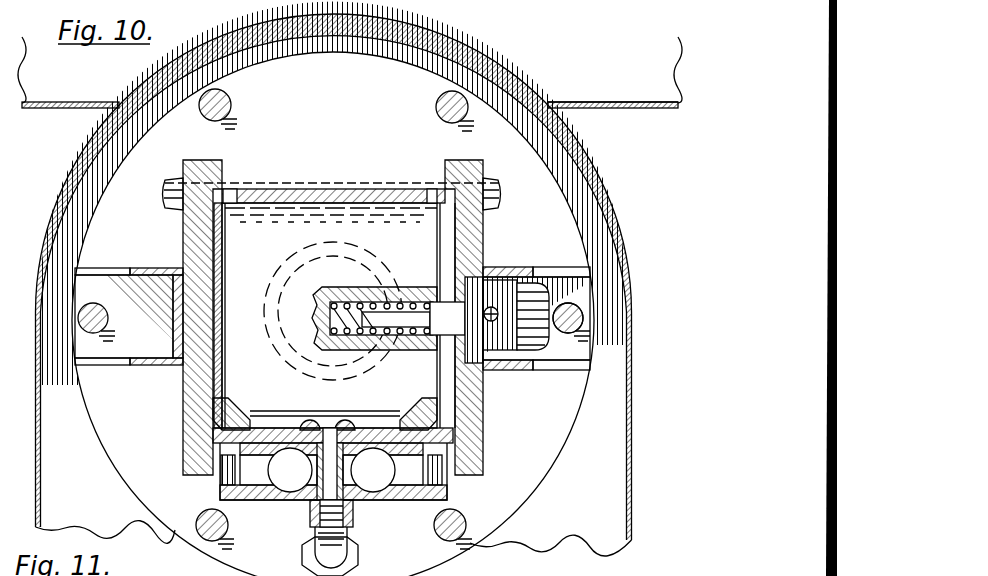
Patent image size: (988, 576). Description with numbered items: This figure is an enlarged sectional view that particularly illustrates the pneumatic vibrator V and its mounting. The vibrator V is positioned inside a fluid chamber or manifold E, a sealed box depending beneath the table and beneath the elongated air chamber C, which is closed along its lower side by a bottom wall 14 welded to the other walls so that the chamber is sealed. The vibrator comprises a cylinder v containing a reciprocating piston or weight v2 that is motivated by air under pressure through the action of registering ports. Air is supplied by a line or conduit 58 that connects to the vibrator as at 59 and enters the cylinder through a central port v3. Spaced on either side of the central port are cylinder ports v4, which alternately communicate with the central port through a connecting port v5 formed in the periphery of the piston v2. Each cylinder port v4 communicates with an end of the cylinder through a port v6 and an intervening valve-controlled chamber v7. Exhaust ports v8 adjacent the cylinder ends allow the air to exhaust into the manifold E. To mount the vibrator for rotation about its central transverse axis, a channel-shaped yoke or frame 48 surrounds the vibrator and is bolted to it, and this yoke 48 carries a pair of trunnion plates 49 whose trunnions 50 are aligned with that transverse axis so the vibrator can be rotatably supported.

The bottom wall 14 is at (645, 108).
The yoke 48 is at (146, 351).
The trunnion plates 49 is at (553, 243).
The trunnions 50 is at (272, 283).
The air line 58 is at (358, 556).
The vibrator connection 59 is at (353, 517).
The air chamber C is at (350, 72).
The manifold E is at (334, 288).
The vibrator V is at (334, 315).
The cylinder v is at (371, 196).
The piston v2 is at (391, 261).
The central port v3 is at (333, 484).
The cylinder ports v4 is at (281, 409).
The connecting port v5 is at (327, 403).
The ports v6 is at (237, 445).
The valve-controlled chamber v7 is at (287, 480).
The exhaust ports v8 is at (251, 181).